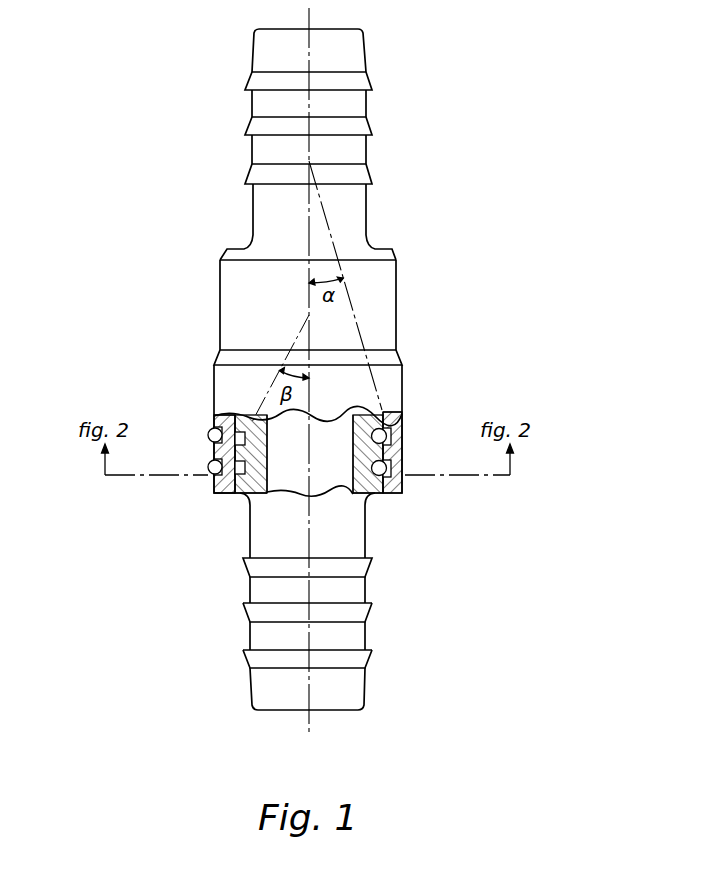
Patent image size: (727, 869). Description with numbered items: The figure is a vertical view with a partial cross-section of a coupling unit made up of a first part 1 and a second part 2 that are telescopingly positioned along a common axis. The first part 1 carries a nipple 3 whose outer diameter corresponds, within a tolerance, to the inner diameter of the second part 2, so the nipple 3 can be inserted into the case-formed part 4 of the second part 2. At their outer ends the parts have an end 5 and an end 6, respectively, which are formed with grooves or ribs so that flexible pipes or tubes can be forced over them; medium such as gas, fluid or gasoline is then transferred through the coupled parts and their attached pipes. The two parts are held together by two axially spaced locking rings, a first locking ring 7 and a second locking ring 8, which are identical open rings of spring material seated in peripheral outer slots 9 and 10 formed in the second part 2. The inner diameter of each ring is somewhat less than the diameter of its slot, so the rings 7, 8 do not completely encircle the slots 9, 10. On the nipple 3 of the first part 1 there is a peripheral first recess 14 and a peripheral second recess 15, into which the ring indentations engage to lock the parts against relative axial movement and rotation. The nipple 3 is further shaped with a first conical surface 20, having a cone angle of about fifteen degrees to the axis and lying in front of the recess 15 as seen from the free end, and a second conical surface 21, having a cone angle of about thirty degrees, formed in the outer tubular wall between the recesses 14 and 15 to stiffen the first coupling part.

The first part 1 is at (348, 525).
The second part 2 is at (380, 294).
The nipple 3 is at (247, 496).
The case-formed part 4 is at (400, 421).
The end 5 is at (348, 692).
The end 6 is at (347, 50).
The first locking ring 7 is at (209, 466).
The second locking ring 8 is at (209, 431).
The peripheral outer slot 9 is at (395, 468).
The peripheral outer slot 10 is at (395, 434).
The first recess 14 is at (217, 487).
The second recess 15 is at (236, 414).
The first conical surface 20 is at (365, 418).
The second conical surface 21 is at (262, 448).